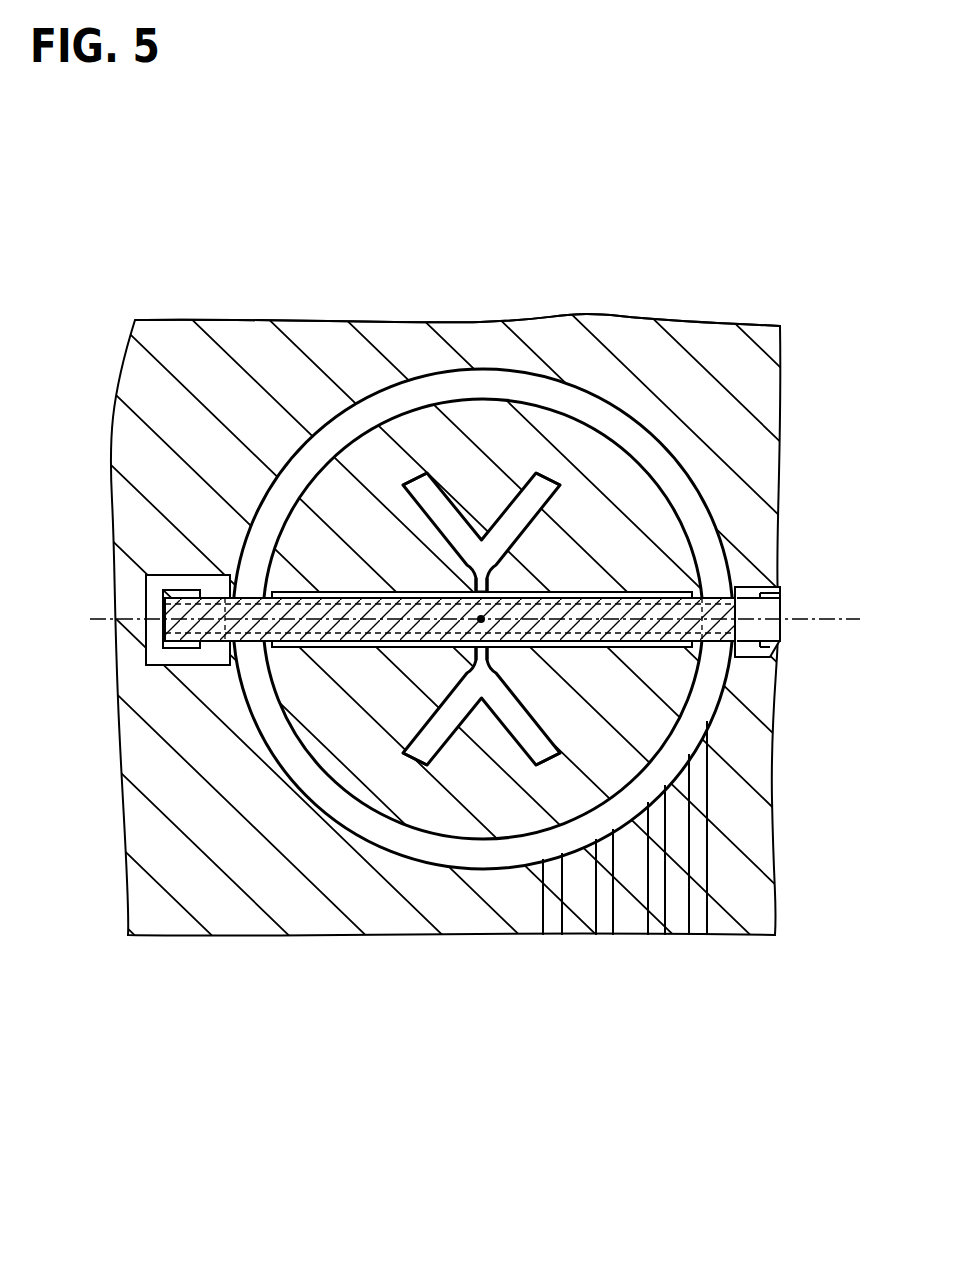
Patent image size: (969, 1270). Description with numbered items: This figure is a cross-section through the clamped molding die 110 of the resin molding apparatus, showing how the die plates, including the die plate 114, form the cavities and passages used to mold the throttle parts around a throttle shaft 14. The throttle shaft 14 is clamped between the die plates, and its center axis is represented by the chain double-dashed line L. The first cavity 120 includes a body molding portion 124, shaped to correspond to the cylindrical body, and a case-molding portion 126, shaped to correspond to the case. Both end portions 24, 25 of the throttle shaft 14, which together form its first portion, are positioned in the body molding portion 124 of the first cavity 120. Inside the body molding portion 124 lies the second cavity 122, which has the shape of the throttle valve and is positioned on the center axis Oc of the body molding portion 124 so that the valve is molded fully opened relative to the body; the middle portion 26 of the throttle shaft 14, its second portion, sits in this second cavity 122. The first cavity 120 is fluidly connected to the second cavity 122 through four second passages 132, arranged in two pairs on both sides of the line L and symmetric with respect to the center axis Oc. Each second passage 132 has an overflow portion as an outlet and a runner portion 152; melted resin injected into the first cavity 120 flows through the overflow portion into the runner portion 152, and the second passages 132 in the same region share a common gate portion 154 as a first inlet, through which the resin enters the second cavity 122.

The throttle shaft 14 is at (407, 602).
The end portion 24 is at (245, 585).
The end portion 25 is at (717, 600).
The middle portion 26 is at (623, 593).
The molding die 110 is at (146, 942).
The die plate 114 is at (777, 341).
The first cavity 120 is at (652, 1004).
The second cavity 122 is at (272, 597).
The body molding portion 124 is at (653, 793).
The case-molding portion 126 is at (700, 923).
The second passage 132 is at (416, 468).
The runner portion 152 is at (445, 510).
The gate portion 154 is at (490, 587).
The center axis Oc is at (481, 619).
The center axis of the throttle shaft L is at (815, 617).